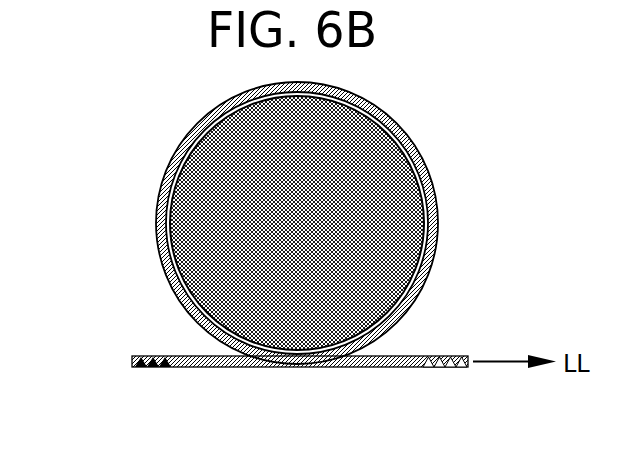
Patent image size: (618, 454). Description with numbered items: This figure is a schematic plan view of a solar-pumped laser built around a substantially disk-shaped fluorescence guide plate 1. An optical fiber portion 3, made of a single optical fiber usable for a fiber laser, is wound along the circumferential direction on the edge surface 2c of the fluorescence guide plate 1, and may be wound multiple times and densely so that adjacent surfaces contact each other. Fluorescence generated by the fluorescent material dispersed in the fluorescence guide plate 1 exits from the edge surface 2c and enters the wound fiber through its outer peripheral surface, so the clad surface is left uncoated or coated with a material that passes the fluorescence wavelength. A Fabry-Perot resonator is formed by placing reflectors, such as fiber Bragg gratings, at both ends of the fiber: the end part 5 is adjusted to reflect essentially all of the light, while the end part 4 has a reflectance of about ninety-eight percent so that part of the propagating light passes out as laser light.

The fluorescence guide plate 1 is at (286, 243).
The edge surface 2c is at (431, 180).
The optical fiber portion 3 is at (358, 97).
The end part 4 is at (450, 355).
The end part 5 is at (152, 354).